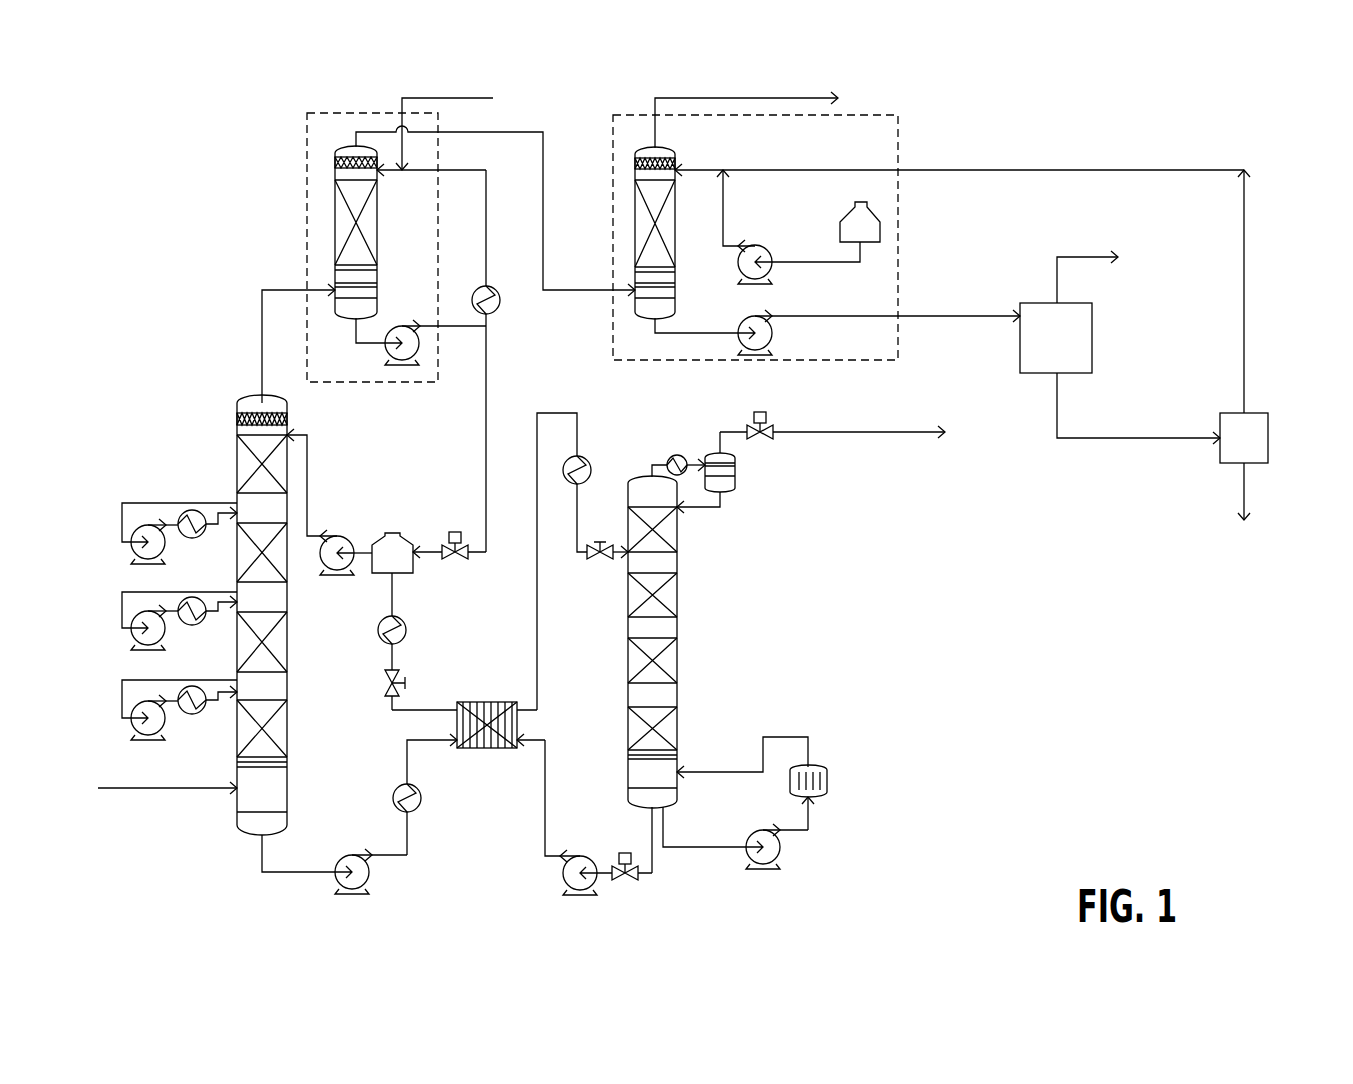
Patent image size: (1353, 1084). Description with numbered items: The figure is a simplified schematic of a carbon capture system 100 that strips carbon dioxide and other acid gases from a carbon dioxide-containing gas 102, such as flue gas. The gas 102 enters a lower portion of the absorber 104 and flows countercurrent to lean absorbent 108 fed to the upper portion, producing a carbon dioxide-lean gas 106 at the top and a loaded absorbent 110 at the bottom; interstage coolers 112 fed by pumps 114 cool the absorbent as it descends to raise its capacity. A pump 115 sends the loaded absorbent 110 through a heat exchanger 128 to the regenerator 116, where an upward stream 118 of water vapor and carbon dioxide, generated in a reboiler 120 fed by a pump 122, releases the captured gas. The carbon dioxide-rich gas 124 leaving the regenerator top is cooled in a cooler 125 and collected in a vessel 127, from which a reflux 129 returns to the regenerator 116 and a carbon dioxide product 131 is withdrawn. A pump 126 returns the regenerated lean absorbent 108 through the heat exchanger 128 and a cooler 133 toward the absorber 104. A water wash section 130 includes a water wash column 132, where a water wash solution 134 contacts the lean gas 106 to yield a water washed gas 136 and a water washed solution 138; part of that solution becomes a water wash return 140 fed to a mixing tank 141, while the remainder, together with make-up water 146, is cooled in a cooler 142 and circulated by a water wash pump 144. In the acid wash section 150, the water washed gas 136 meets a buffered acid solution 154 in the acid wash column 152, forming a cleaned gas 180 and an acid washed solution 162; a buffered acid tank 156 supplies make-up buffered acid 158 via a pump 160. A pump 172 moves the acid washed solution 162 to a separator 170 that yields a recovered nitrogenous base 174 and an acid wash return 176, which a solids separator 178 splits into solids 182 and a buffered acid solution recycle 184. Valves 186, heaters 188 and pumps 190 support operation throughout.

The carbon capture system 100 is at (123, 130).
The carbon dioxide-containing gas 102 is at (157, 790).
The absorber 104 is at (288, 655).
The carbon dioxide-lean gas 106 is at (262, 340).
The lean absorbent 108 is at (307, 472).
The loaded absorbent 110 is at (293, 875).
The interstage coolers 112 is at (201, 538).
The pump 114 is at (132, 554).
The pump 115 is at (352, 895).
The regenerator 116 is at (680, 637).
The stream 118 is at (740, 770).
The reboiler 120 is at (828, 780).
The pump 122 is at (765, 870).
The carbon dioxide-rich gas 124 is at (660, 462).
The cooler 125 is at (678, 454).
The pump 126 is at (580, 895).
The vessel 127 is at (737, 475).
The heat exchanger 128 is at (504, 700).
The reflux 129 is at (707, 511).
The water wash section 130 is at (307, 244).
The carbon dioxide product 131 is at (865, 434).
The water wash column 132 is at (335, 200).
The cooler 133 is at (398, 645).
The water wash solution 134 is at (410, 178).
The water washed gas 136 is at (527, 130).
The water washed solution 138 is at (366, 345).
The water wash return 140 is at (486, 372).
The mixing tank 141 is at (409, 545).
The cooler 142 is at (498, 310).
The water wash pump 144 is at (410, 322).
The make-up water 146 is at (453, 96).
The acid wash section 150 is at (898, 290).
The acid wash column 152 is at (635, 200).
The buffered acid solution 154 is at (696, 176).
The buffered acid tank 156 is at (882, 230).
The make-up buffered acid 158 is at (723, 217).
The pump 160 is at (768, 280).
The acid washed solution 162 is at (700, 331).
The separator 170 is at (1092, 340).
The pump 172 is at (755, 357).
The recovered nitrogenous base 174 is at (1093, 254).
The acid wash return 176 is at (1162, 440).
The solids separator 178 is at (1268, 438).
The cleaned gas 180 is at (701, 96).
The solids 182 is at (1246, 492).
The buffered acid solution recycle 184 is at (1246, 340).
The valves 186 is at (467, 558).
The heaters 188 is at (421, 800).
The pumps 190 is at (335, 576).